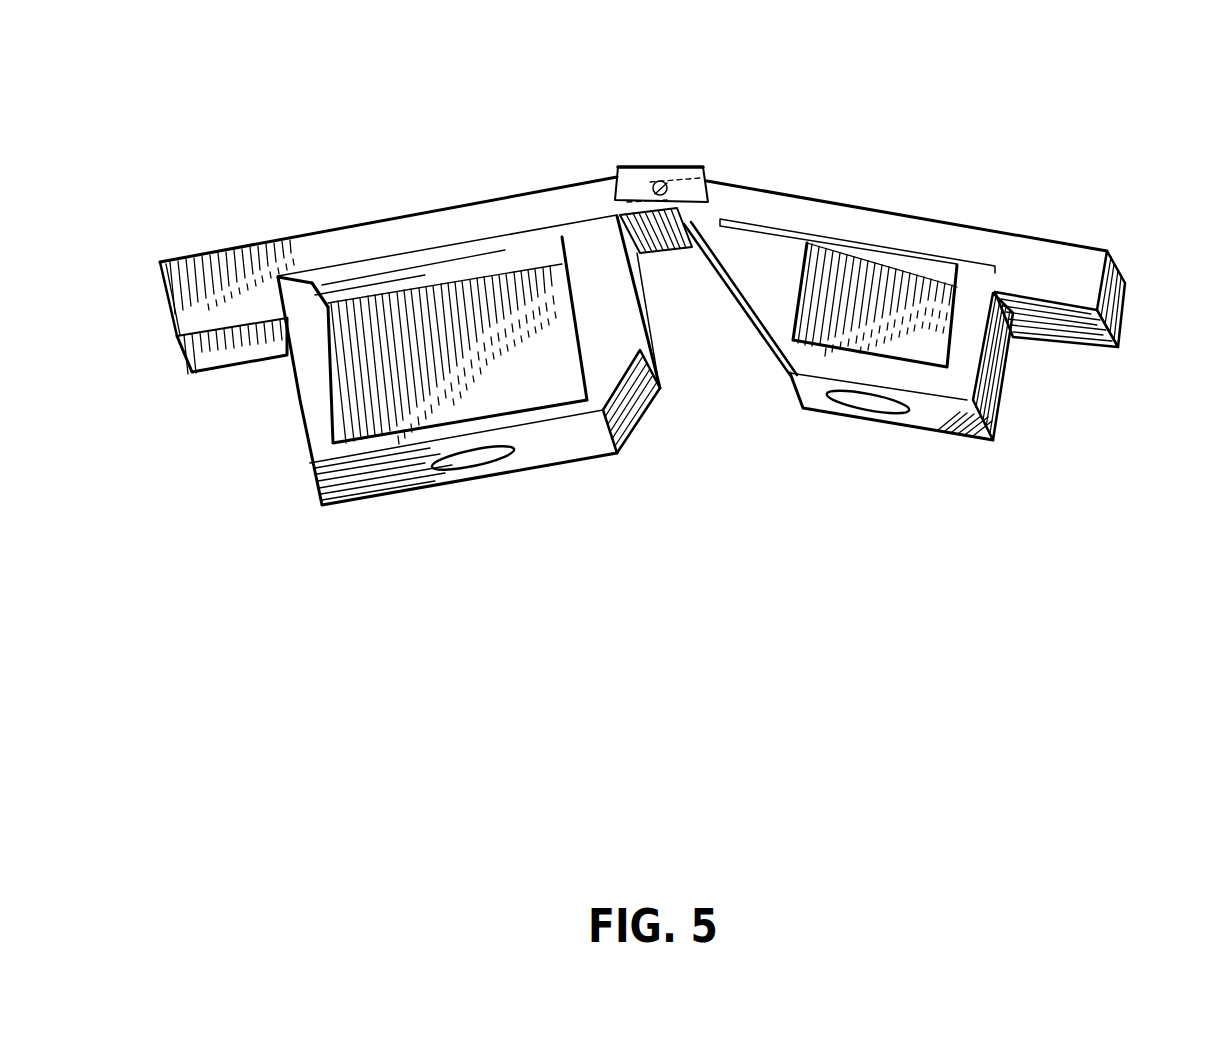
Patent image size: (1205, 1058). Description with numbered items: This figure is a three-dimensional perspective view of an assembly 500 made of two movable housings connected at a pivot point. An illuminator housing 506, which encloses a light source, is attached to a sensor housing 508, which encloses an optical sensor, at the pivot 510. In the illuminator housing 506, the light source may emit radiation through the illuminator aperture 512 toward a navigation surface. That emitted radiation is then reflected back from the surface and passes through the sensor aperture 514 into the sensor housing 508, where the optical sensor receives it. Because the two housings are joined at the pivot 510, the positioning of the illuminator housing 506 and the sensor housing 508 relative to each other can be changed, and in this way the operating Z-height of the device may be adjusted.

The bracket assembly 500 is at (957, 146).
The illuminator housing 506 is at (1004, 375).
The sensor housing 508 is at (293, 387).
The pivot 510 is at (661, 189).
The illuminator aperture 512 is at (870, 402).
The sensor aperture 514 is at (473, 461).